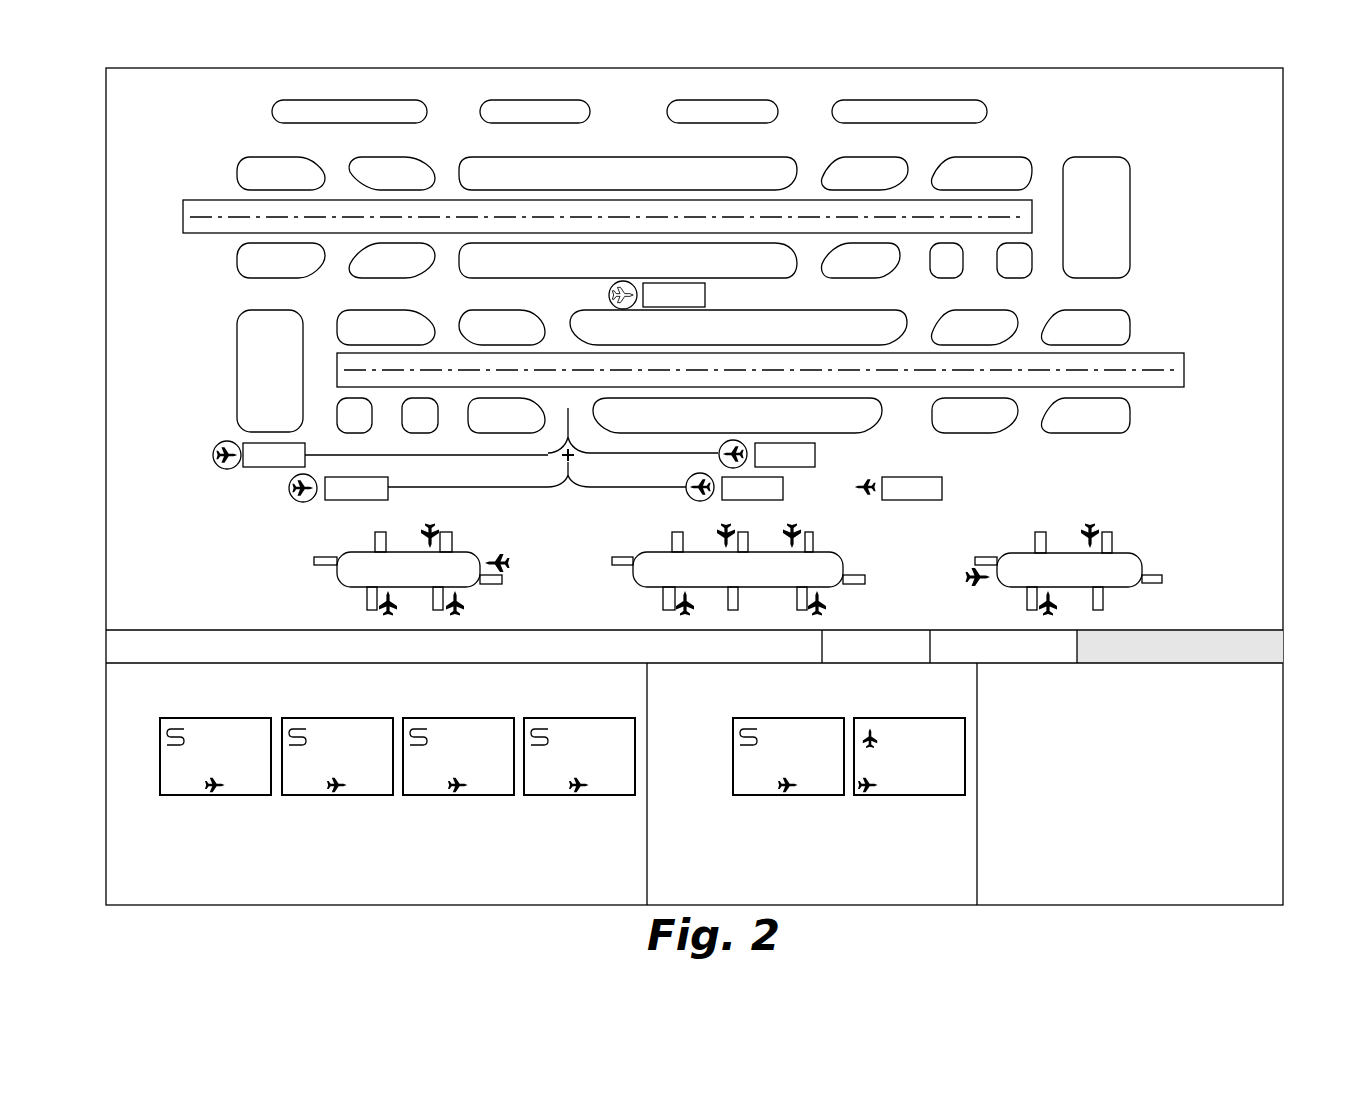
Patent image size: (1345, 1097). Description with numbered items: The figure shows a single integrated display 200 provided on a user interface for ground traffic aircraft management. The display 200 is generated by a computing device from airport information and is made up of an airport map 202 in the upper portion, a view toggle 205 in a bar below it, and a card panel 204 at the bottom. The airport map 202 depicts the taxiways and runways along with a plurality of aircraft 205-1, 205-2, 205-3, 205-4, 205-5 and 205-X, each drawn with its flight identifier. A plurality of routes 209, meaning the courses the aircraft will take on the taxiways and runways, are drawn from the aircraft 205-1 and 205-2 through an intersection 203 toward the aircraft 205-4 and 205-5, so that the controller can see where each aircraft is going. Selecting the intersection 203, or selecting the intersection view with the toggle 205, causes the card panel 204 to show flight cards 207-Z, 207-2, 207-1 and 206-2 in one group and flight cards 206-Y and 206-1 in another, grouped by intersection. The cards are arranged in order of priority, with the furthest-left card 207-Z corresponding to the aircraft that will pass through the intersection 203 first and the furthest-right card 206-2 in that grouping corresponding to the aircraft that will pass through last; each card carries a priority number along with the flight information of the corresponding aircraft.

The single integrated display 200 is at (90, 108).
The airport map 202 is at (740, 349).
The intersection 203 is at (573, 462).
The card panel 204 is at (744, 784).
The view toggle 205 is at (1299, 630).
The aircraft 205-1 is at (213, 455).
The aircraft 205-2 is at (289, 488).
The aircraft 205-3 is at (609, 295).
The aircraft 205-4 is at (815, 455).
The aircraft 205-5 is at (690, 498).
The aircraft 205-X is at (942, 488).
The flight card 206-1 is at (910, 797).
The flight card 206-2 is at (580, 797).
The flight card 206-Y is at (789, 797).
The flight card 207-1 is at (459, 797).
The flight card 207-2 is at (338, 797).
The flight card 207-Z is at (216, 797).
The aircraft route 209 is at (480, 456).